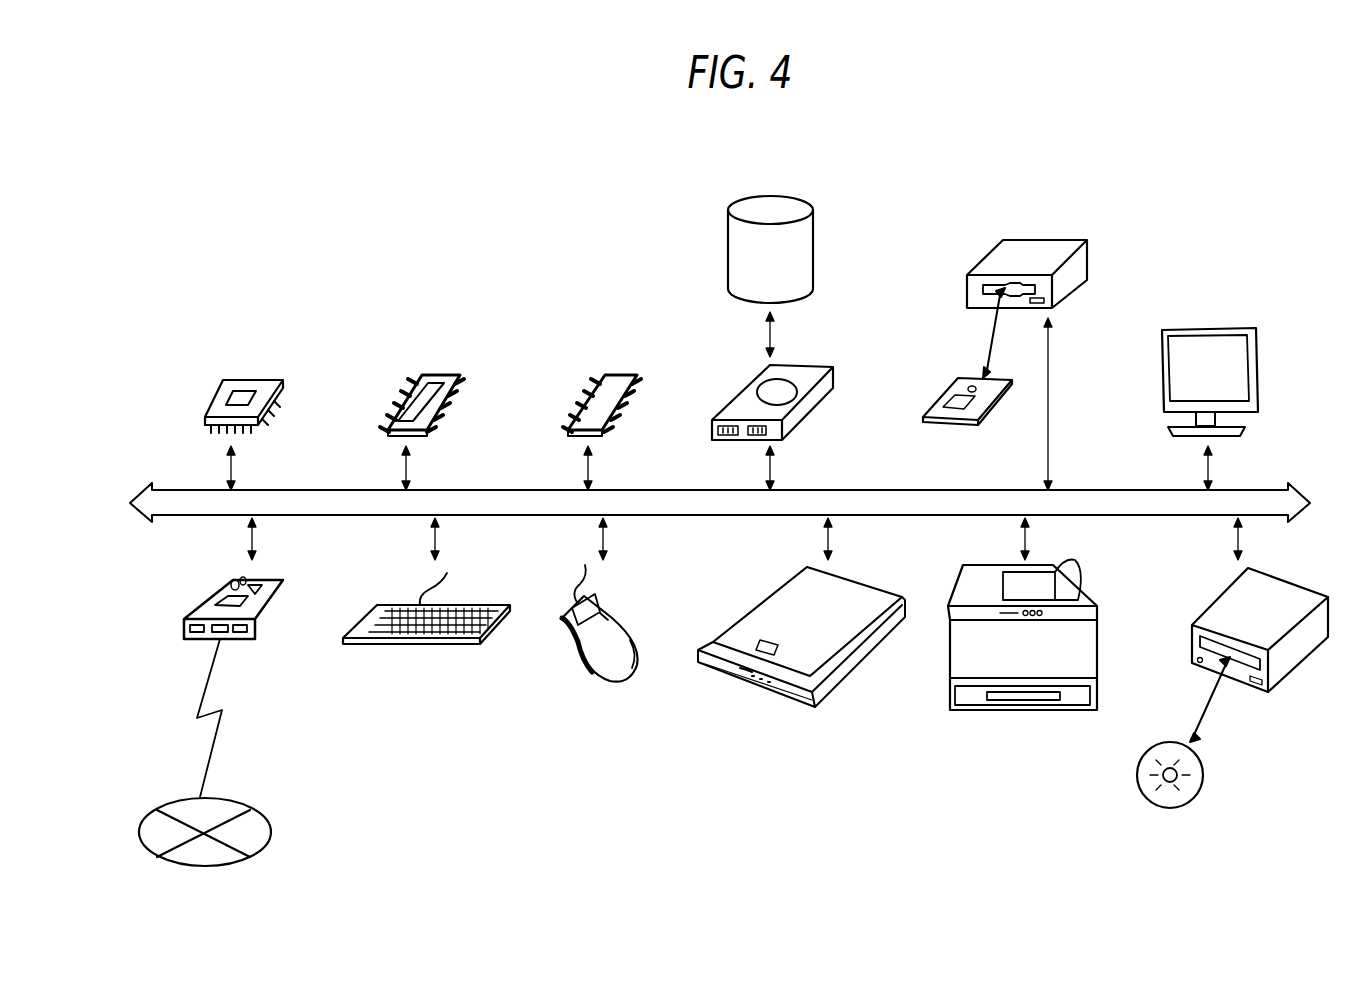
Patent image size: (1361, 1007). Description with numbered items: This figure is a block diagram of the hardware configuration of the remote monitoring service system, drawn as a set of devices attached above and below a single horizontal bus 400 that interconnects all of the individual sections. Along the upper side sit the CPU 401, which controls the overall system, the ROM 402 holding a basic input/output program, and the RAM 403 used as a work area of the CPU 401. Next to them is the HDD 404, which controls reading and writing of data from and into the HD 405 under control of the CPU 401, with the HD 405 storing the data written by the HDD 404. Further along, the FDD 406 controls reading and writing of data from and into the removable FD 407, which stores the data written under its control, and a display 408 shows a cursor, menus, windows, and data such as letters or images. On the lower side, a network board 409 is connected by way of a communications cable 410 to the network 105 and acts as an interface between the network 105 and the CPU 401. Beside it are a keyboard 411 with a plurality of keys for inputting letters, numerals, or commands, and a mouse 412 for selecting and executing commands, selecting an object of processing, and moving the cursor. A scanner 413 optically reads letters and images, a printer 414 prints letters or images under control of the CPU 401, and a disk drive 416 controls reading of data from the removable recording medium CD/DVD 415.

The bus 400 is at (1270, 490).
The CPU 401 is at (247, 375).
The ROM 402 is at (441, 375).
The RAM 403 is at (618, 375).
The HDD 404 is at (805, 368).
The HD 405 is at (783, 195).
The FDD 406 is at (1020, 240).
The FD 407 is at (935, 425).
The display 408 is at (1207, 328).
The network board 409 is at (244, 640).
The communications cable 410 is at (212, 755).
The network 105 is at (272, 832).
The keyboard 411 is at (425, 645).
The mouse 412 is at (607, 682).
The scanner 413 is at (785, 705).
The printer 414 is at (1010, 712).
The CD/DVD 415 is at (1170, 810).
The disk drive 416 is at (1306, 665).